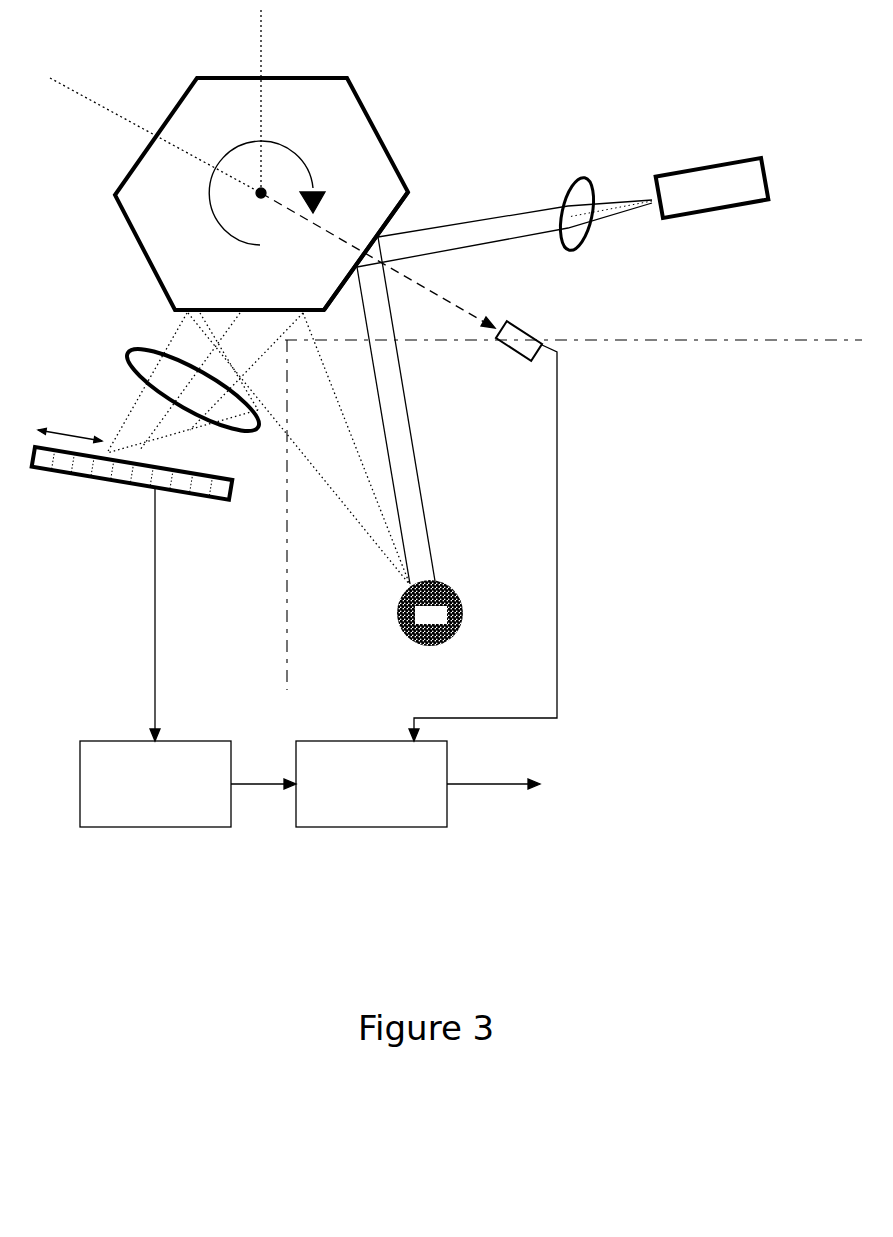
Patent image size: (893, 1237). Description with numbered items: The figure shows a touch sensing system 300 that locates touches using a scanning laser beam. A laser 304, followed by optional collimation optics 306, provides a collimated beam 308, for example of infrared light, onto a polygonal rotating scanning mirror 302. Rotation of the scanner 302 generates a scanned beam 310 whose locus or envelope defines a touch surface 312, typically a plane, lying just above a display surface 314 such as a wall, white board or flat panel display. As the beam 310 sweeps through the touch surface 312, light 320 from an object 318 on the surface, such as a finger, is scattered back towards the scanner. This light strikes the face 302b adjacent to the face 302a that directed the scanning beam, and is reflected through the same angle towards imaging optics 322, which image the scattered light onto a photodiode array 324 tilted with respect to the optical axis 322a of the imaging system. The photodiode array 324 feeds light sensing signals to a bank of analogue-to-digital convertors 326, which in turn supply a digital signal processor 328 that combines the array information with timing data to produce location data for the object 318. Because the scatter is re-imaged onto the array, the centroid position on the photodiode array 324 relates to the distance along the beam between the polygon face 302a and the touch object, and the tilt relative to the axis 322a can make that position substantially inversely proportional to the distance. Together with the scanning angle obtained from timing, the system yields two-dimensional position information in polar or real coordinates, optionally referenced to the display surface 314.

The touch sensing system 300 is at (122, 935).
The polygonal rotating scanning mirror 302 is at (333, 132).
The scanner face 302a is at (405, 200).
The adjacent scanner face 302b is at (217, 310).
The laser 304 is at (718, 163).
The collimation optics 306 is at (580, 177).
The collimated beam 308 is at (492, 223).
The scanned beam 310 is at (392, 397).
The touch surface 312 is at (512, 524).
The display surface 314 is at (806, 416).
The object 318 is at (444, 623).
The scattered light 320 is at (307, 438).
The imaging optics 322 is at (137, 355).
The optical axis 322a is at (160, 427).
The photodiode array 324 is at (35, 467).
The bank of analogue-to-digital convertors 326 is at (123, 740).
The digital signal processor 328 is at (325, 741).